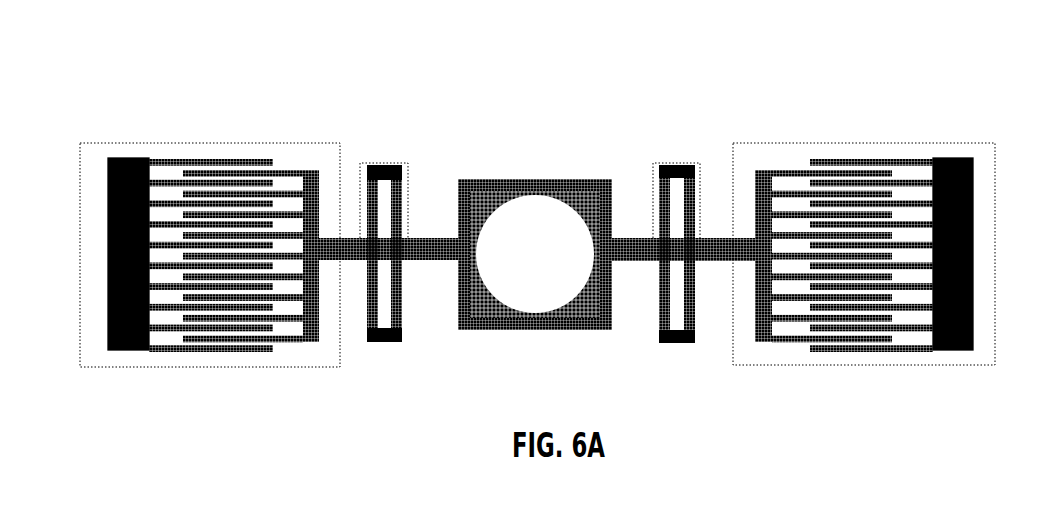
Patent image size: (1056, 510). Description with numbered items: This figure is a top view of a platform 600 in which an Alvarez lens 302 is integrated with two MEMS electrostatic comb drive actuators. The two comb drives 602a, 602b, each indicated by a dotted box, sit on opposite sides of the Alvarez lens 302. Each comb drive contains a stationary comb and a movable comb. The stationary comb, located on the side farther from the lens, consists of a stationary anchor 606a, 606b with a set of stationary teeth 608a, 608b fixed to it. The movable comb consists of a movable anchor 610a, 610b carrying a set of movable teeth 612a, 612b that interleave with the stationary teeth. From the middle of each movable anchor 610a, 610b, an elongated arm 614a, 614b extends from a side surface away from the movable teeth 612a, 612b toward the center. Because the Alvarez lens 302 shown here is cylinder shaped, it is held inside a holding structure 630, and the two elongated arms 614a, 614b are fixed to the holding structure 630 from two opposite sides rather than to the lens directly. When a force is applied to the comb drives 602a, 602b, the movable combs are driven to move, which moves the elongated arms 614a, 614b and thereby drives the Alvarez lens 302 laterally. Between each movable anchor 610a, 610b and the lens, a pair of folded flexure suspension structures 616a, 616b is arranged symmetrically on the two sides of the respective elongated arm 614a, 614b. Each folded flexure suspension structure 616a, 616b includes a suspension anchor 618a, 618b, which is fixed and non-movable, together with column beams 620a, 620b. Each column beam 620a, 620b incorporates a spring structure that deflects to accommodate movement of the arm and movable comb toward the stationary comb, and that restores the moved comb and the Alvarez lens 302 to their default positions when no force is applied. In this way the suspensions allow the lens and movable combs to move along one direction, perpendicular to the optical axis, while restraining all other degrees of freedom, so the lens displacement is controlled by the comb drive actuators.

The acoustic wave resonator device 600 is at (548, 26).
The comb drive 602a is at (80, 225).
The comb drive 602b is at (993, 228).
The stationary anchor 606a is at (128, 157).
The stationary anchor 606b is at (952, 158).
The stationary teeth 608a is at (196, 162).
The stationary teeth 608b is at (872, 162).
The movable anchor 610a is at (312, 170).
The movable anchor 610b is at (763, 177).
The movable teeth 612a is at (265, 172).
The movable teeth 612b is at (823, 172).
The elongated arm 614a is at (345, 262).
The elongated arm 614b is at (720, 262).
The folded flexure suspension structure 616a is at (360, 168).
The folded flexure suspension structure 616b is at (698, 163).
The suspension anchor 618a is at (397, 168).
The suspension anchor 618b is at (665, 170).
The column beam 620a is at (395, 200).
The column beam 620b is at (662, 193).
The Alvarez lens 302 is at (536, 212).
The holding structure 630 is at (557, 318).